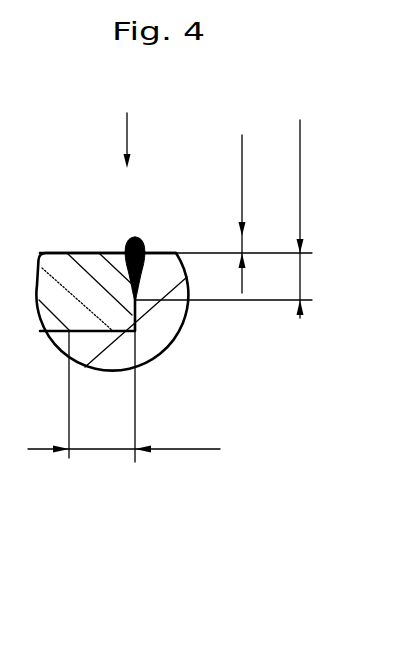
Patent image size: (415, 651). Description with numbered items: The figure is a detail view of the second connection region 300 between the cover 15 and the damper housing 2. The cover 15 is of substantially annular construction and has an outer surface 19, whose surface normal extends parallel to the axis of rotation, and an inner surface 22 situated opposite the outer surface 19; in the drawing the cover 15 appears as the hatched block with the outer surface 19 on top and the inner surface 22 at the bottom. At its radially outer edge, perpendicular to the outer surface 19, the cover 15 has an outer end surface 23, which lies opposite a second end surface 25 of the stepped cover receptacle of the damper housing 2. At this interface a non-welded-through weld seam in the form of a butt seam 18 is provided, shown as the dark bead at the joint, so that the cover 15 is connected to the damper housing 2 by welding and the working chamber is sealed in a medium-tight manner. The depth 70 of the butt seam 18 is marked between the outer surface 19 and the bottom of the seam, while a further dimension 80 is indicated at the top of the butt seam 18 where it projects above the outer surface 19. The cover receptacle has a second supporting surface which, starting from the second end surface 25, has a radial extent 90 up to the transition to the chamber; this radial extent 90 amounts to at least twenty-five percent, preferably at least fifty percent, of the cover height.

The damper housing 2 is at (118, 355).
The cover 15 is at (90, 270).
The butt seam 18 is at (143, 240).
The outer surface 19 is at (53, 252).
The inner surface 22 is at (108, 318).
The outer end surface 23 is at (142, 312).
The end surface 25 is at (153, 265).
The depth 70 is at (300, 285).
The bead height dimension 80 is at (242, 250).
The radial extent 90 is at (103, 449).
The second connection region 300 is at (120, 126).